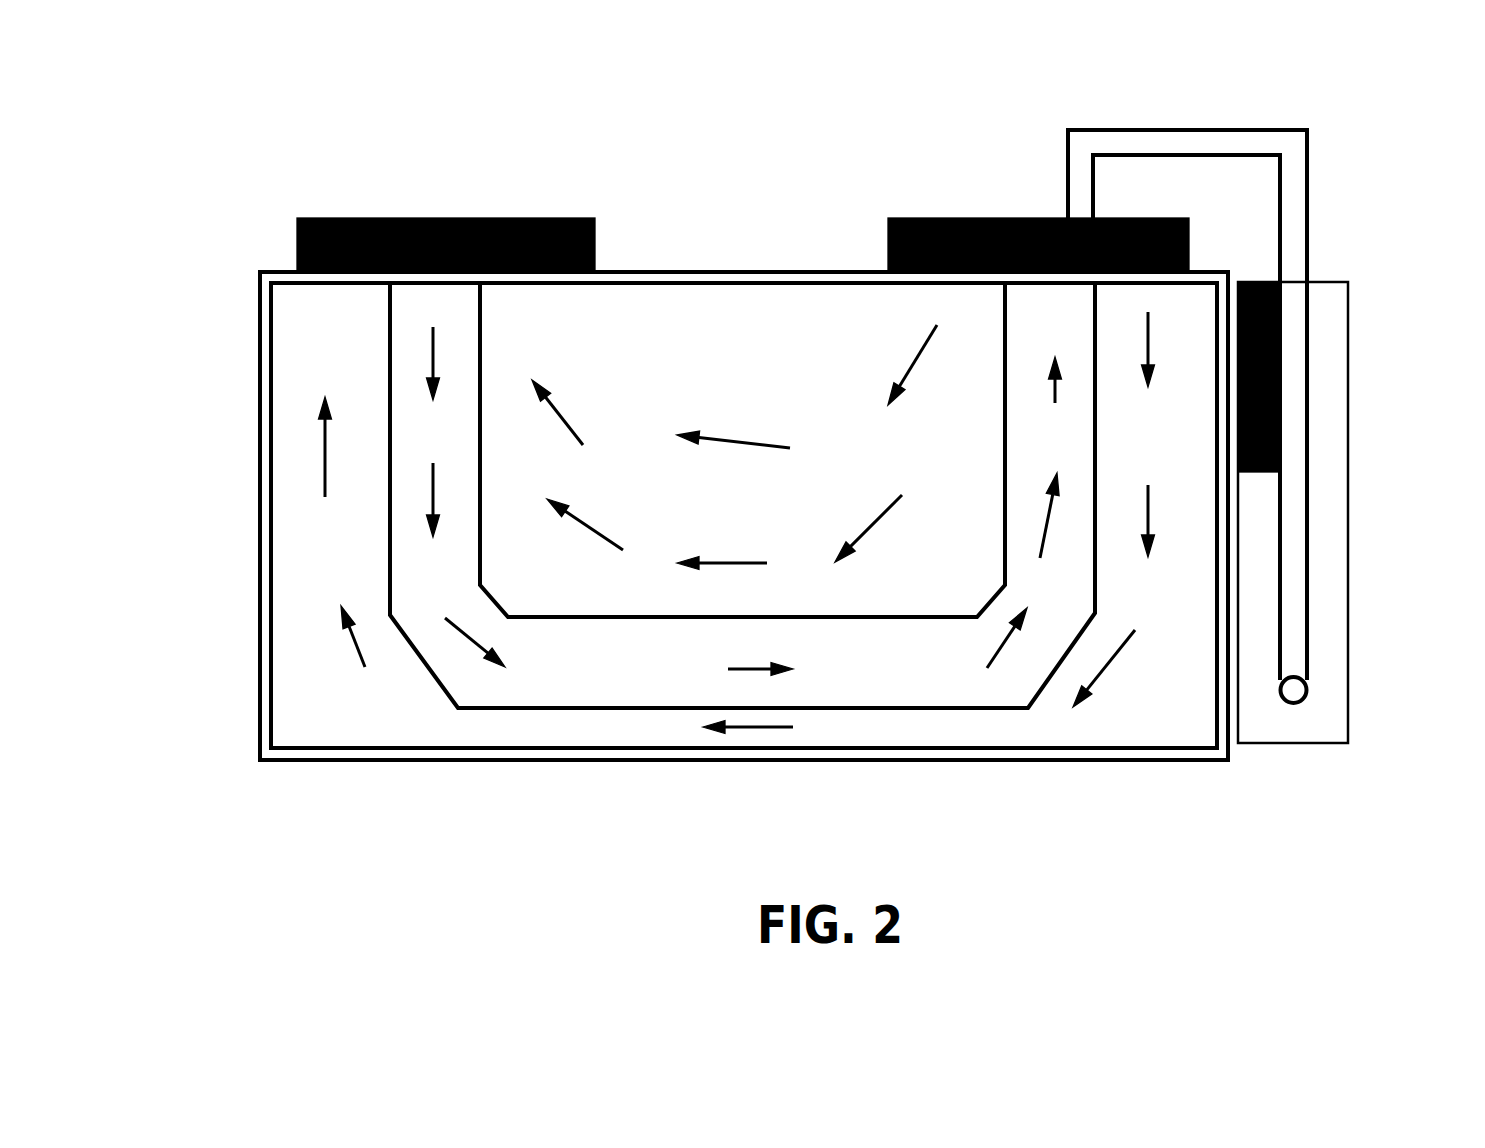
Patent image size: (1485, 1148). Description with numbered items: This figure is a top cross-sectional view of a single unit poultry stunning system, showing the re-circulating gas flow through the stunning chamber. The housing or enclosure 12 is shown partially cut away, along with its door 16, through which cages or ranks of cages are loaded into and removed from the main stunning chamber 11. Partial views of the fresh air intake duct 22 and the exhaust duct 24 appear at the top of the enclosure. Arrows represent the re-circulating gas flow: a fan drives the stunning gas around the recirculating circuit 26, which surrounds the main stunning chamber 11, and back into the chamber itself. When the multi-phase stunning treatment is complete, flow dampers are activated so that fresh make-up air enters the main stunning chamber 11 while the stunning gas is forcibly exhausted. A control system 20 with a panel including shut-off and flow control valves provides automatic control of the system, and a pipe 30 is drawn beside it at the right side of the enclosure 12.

The stunning chamber 11 is at (771, 512).
The enclosure 12 is at (337, 762).
The door 16 is at (259, 380).
The control system 20 is at (1335, 297).
The fresh air intake duct 22 is at (968, 218).
The exhaust duct 24 is at (405, 218).
The recirculating circuit 26 is at (902, 680).
The pipe 30 is at (1143, 130).